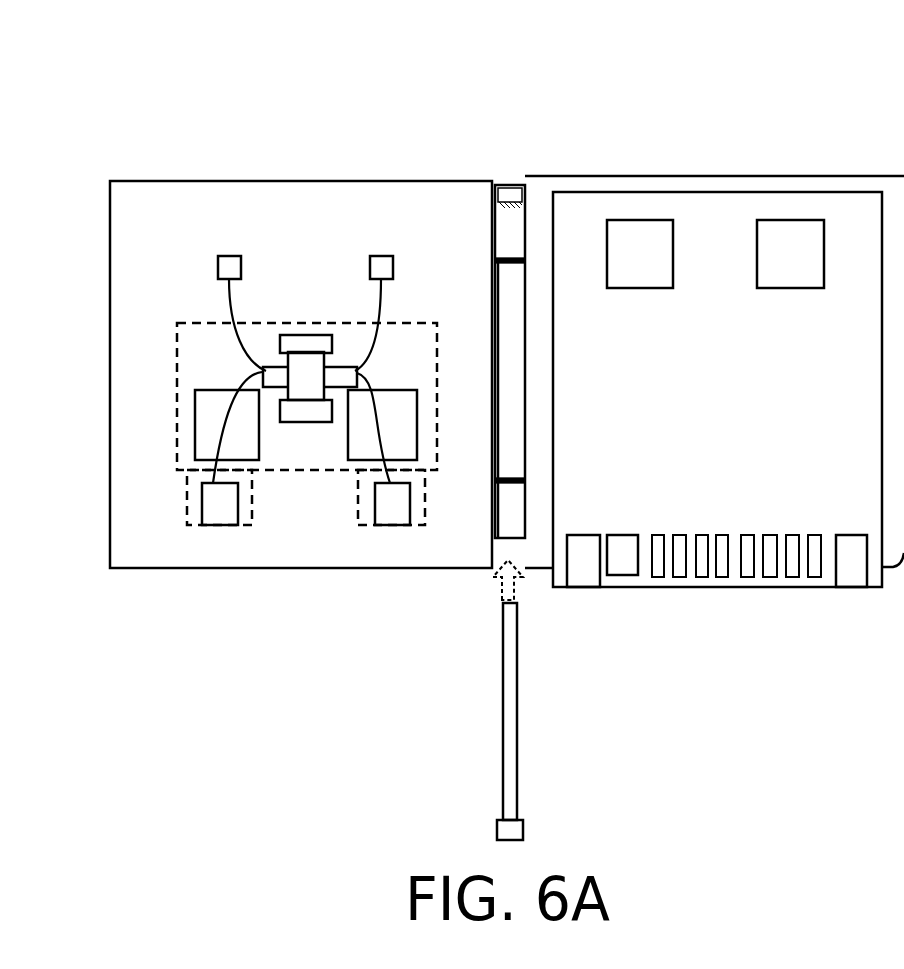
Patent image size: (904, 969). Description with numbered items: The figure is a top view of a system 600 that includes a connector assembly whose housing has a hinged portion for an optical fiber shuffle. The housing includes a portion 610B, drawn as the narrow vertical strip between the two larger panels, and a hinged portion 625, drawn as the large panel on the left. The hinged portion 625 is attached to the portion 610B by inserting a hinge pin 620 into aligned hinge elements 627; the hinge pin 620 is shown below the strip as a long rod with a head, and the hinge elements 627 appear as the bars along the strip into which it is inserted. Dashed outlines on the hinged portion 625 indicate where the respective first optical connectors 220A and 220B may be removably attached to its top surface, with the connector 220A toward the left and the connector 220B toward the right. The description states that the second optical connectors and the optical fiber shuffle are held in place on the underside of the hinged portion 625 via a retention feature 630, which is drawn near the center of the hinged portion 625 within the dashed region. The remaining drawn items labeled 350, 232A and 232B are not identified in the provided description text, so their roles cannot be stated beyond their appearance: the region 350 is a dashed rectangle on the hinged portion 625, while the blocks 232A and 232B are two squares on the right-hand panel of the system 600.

The system 600 is at (241, 94).
The hinged portion 625 is at (110, 527).
The sensor module 350 is at (188, 280).
The retention feature 630 is at (315, 352).
The first optical connector 220A is at (223, 510).
The first optical connector 220B is at (393, 510).
The portion of the housing 610B is at (509, 327).
The hinge elements 627 is at (515, 235).
The first battery 232A is at (645, 220).
The second battery 232B is at (804, 220).
The hinge pin 620 is at (508, 751).